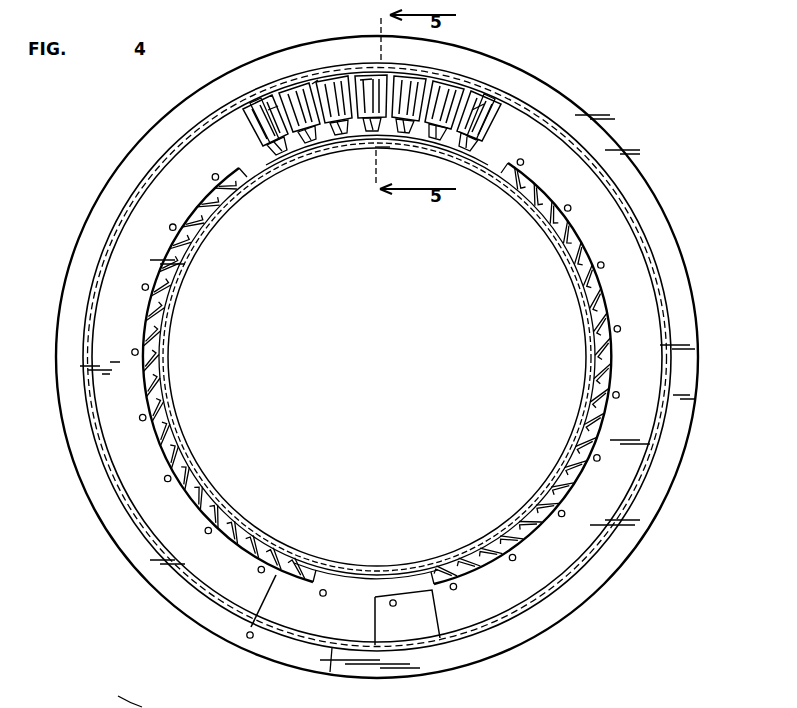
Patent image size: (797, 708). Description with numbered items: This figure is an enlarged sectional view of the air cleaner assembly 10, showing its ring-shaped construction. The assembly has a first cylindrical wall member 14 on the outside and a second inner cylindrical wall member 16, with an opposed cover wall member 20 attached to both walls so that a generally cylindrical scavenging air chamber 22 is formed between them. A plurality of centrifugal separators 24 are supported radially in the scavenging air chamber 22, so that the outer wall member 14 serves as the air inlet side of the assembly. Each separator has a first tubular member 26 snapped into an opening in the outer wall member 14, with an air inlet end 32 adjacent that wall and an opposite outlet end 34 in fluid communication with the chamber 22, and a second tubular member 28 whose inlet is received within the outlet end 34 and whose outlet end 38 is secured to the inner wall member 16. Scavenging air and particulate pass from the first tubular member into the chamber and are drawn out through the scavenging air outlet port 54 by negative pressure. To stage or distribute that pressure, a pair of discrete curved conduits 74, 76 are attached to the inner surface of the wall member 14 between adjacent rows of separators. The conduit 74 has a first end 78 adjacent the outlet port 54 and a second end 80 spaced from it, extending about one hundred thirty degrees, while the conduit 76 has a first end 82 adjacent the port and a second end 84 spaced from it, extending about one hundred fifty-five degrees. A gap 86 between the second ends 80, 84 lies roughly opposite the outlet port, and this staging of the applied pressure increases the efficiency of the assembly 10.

The air cleaner assembly 10 is at (641, 97).
The first cylindrical wall member 14 is at (259, 640).
The second inner cylindrical wall member 16 is at (343, 560).
The cover wall member 20 is at (641, 178).
The scavenging air chamber 22 is at (448, 92).
The centrifugal separators 24 is at (313, 80).
The first tubular member 26 is at (266, 138).
The second tubular member 28 is at (306, 152).
The air inlet end 32 is at (115, 694).
The outlet end 34 is at (381, 150).
The outlet end 38 is at (346, 150).
The scavenging air outlet port 54 is at (330, 655).
The conduit 74 is at (128, 318).
The conduit 76 is at (603, 417).
The first end 78 is at (310, 578).
The second end 80 is at (270, 105).
The first end 82 is at (375, 595).
The second end 84 is at (478, 108).
The gap 86 is at (369, 71).